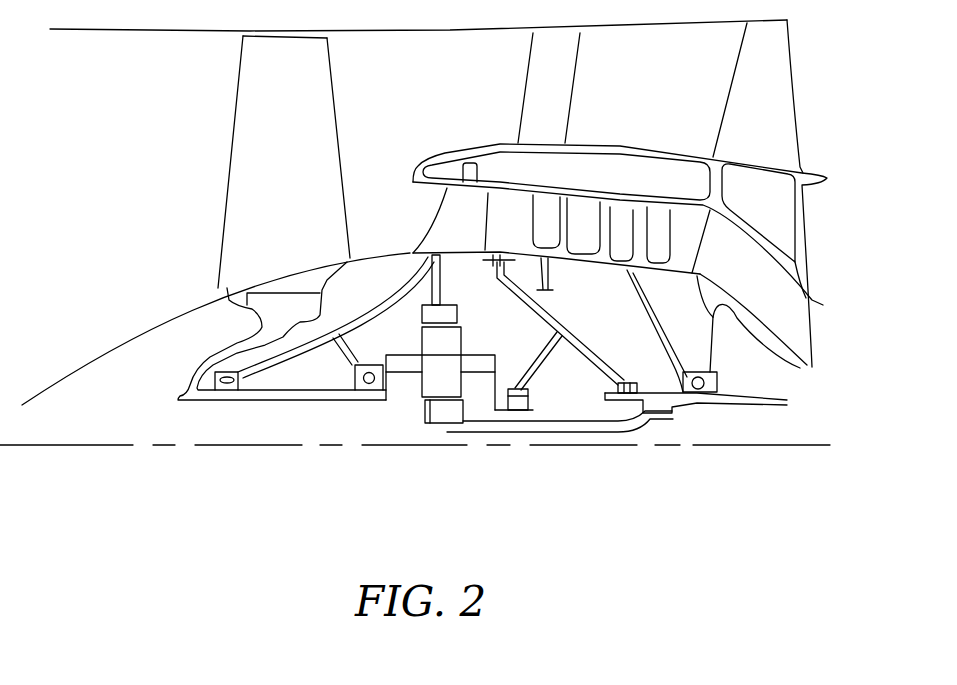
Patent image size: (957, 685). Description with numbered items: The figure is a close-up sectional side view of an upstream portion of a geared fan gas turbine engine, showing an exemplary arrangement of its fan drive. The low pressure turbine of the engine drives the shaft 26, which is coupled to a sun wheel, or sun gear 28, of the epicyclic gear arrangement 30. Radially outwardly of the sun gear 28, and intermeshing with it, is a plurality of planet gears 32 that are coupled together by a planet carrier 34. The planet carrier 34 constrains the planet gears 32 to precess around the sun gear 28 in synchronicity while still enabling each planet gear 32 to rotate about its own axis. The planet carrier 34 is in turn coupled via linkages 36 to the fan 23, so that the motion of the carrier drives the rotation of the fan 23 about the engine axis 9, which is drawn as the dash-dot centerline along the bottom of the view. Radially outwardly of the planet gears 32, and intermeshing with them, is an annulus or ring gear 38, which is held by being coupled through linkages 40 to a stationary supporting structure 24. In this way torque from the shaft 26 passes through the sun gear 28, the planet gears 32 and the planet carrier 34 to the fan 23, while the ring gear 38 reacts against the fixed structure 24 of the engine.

The engine axis 9 is at (113, 445).
The fan 23 is at (258, 163).
The stationary supporting structure 24 is at (443, 213).
The shaft 26 is at (567, 427).
The sun gear 28 is at (445, 413).
The epicyclic gear arrangement 30 is at (404, 393).
The planet gears 32 is at (432, 385).
The planet carrier 34 is at (490, 385).
The linkages 36 is at (397, 390).
The ring gear 38 is at (447, 313).
The linkages 40 is at (441, 288).